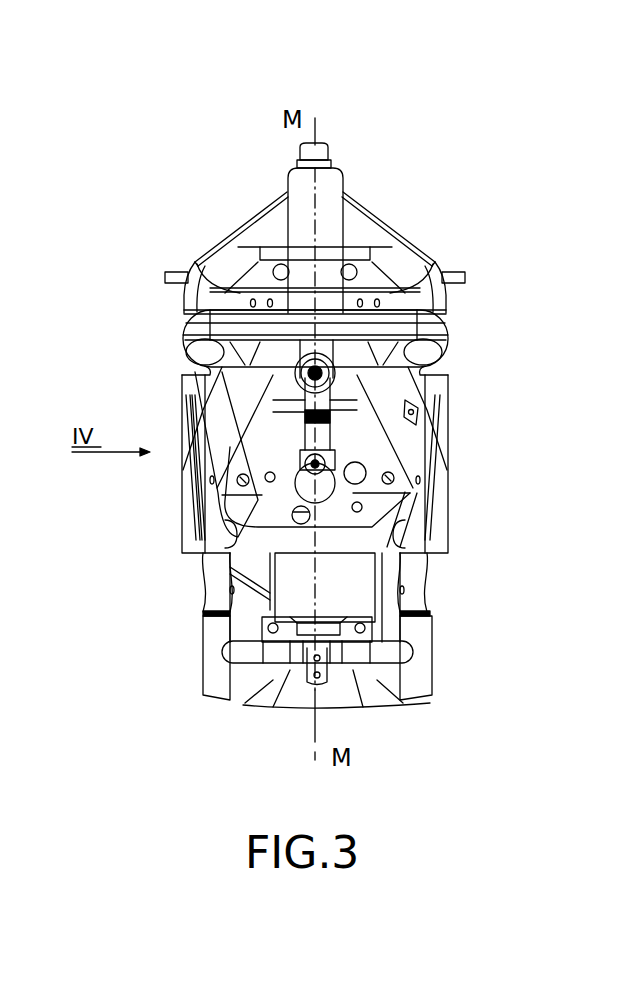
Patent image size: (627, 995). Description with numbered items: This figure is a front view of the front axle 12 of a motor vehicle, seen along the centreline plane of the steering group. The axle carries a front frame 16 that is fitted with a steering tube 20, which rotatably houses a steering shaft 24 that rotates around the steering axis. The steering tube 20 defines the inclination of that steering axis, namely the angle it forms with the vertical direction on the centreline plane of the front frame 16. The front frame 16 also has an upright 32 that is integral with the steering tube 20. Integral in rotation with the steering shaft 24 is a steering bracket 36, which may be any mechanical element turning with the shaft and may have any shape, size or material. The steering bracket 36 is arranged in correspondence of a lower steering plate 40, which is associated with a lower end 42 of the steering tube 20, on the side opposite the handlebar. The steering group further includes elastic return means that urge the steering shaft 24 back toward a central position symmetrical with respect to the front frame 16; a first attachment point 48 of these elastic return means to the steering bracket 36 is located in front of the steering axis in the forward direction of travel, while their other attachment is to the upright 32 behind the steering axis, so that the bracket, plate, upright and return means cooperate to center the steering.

The front axle 12 is at (152, 166).
The front frame 16 is at (366, 198).
The steering tube 20 is at (287, 186).
The steering shaft 24 is at (326, 142).
The upright 32 is at (353, 497).
The steering bracket 36 is at (430, 372).
The lower steering plate 40 is at (445, 338).
The lower end 42 is at (352, 303).
The first attachment point 48 is at (196, 505).